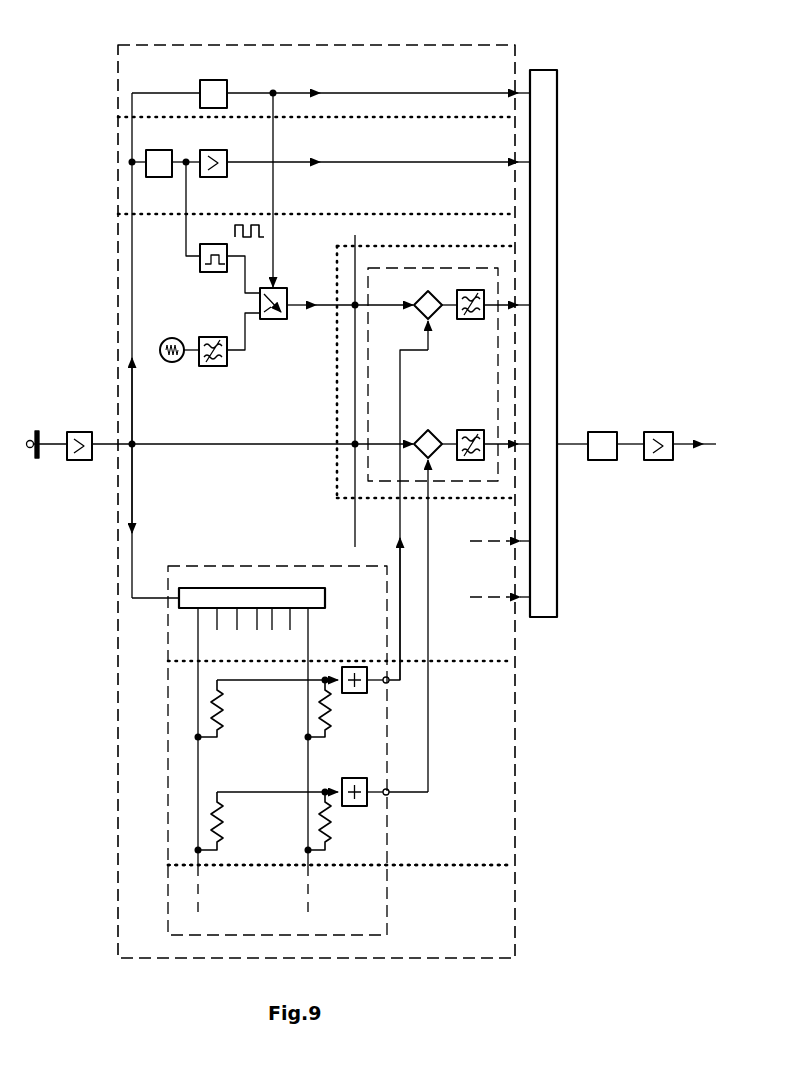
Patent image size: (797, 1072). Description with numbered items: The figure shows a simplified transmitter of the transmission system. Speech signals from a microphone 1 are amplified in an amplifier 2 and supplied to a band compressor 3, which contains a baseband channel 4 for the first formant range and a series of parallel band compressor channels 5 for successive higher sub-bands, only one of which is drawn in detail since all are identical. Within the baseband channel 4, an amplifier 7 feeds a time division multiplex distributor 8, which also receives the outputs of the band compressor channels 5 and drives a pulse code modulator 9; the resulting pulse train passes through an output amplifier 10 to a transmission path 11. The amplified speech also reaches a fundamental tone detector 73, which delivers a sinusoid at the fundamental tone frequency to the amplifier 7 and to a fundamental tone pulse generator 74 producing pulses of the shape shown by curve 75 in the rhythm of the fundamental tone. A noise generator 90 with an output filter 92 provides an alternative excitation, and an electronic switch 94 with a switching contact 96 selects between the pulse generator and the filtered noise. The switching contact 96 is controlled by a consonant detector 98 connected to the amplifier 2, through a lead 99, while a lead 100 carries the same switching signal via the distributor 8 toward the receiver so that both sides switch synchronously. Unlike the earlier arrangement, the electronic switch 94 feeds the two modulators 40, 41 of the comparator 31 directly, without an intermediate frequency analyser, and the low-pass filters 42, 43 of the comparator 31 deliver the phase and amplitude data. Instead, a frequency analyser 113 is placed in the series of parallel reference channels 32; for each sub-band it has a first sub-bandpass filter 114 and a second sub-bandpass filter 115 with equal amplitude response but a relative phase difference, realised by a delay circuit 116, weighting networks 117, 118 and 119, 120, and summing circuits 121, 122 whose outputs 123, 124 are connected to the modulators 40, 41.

The microphone 1 is at (37, 430).
The amplifier 2 is at (78, 432).
The band compressor 3 is at (494, 45).
The baseband channel 4 is at (416, 218).
The parallel band compressor channels 5 is at (337, 379).
The amplifier 7 is at (216, 178).
The time division multiplex distributor 8 is at (557, 98).
The pulse code modulator 9 is at (600, 431).
The output amplifier 10 is at (655, 431).
The transmission path 11 is at (697, 440).
The comparator 31 is at (348, 421).
The parallel reference channels 32 is at (475, 866).
The modulator 40 is at (433, 322).
The modulator 41 is at (437, 432).
The low-pass filter 42 is at (468, 320).
The low-pass filter 43 is at (470, 430).
The fundamental tone detector 73 is at (161, 178).
The fundamental tone pulse generator 74 is at (212, 273).
The curve 75 is at (243, 222).
The noise generator 90 is at (173, 363).
The output filter 92 is at (215, 367).
The electronic switch 94 is at (283, 320).
The switching contact 96 is at (281, 296).
The consonant detector 98 is at (218, 80).
The lead 99 is at (274, 253).
The lead 100 is at (372, 93).
The frequency analyser 113 is at (278, 566).
The first sub-bandpass filter 114 is at (277, 711).
The second sub-bandpass filter 115 is at (277, 822).
The delay circuit 116 is at (325, 596).
The weighting network 117 is at (222, 718).
The weighting network 118 is at (331, 713).
The weighting network 119 is at (222, 824).
The weighting network 120 is at (331, 829).
The summing circuit 121 is at (355, 667).
The summing circuit 122 is at (356, 778).
The output 123 is at (390, 684).
The output 124 is at (389, 796).